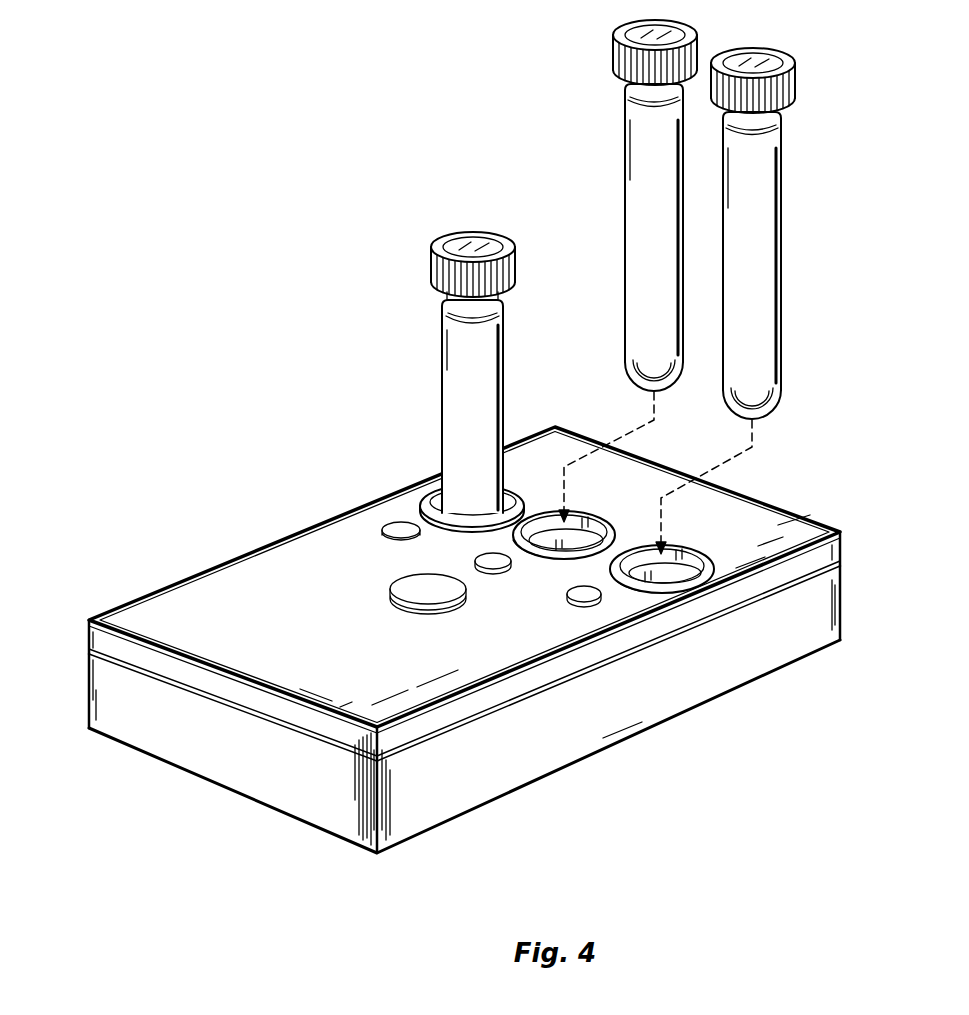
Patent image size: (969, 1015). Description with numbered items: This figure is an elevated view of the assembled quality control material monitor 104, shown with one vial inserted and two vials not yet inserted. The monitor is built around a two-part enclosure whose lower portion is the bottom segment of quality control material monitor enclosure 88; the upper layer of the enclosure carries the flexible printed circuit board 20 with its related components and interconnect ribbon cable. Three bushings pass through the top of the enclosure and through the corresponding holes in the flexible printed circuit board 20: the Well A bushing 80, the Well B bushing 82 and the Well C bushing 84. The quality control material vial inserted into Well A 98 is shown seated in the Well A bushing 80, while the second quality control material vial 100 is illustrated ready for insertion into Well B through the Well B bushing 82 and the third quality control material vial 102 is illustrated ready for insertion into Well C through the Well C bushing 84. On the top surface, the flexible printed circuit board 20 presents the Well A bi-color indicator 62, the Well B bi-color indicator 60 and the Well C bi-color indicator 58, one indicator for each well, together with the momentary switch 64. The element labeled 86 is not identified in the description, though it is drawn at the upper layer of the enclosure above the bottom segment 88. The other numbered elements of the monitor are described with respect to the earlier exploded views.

The flexible printed circuit board 20 is at (440, 640).
The Well C bi-color indicator 58 is at (588, 607).
The Well B bi-color indicator 60 is at (497, 572).
The Well A bi-color indicator 62 is at (385, 531).
The momentary switch 64 is at (390, 593).
The Well A bushing 80 is at (447, 505).
The Well B bushing 82 is at (573, 553).
The Well C bushing 84 is at (647, 583).
The upper layer of base 86 is at (130, 651).
The bottom segment of quality control material monitor enclosure 88 is at (137, 699).
The quality control material vial inserted into Well A 98 is at (442, 352).
The second quality control material vial 100 is at (625, 188).
The third quality control material vial 102 is at (783, 160).
The assembled quality control material monitor 104 is at (895, 589).